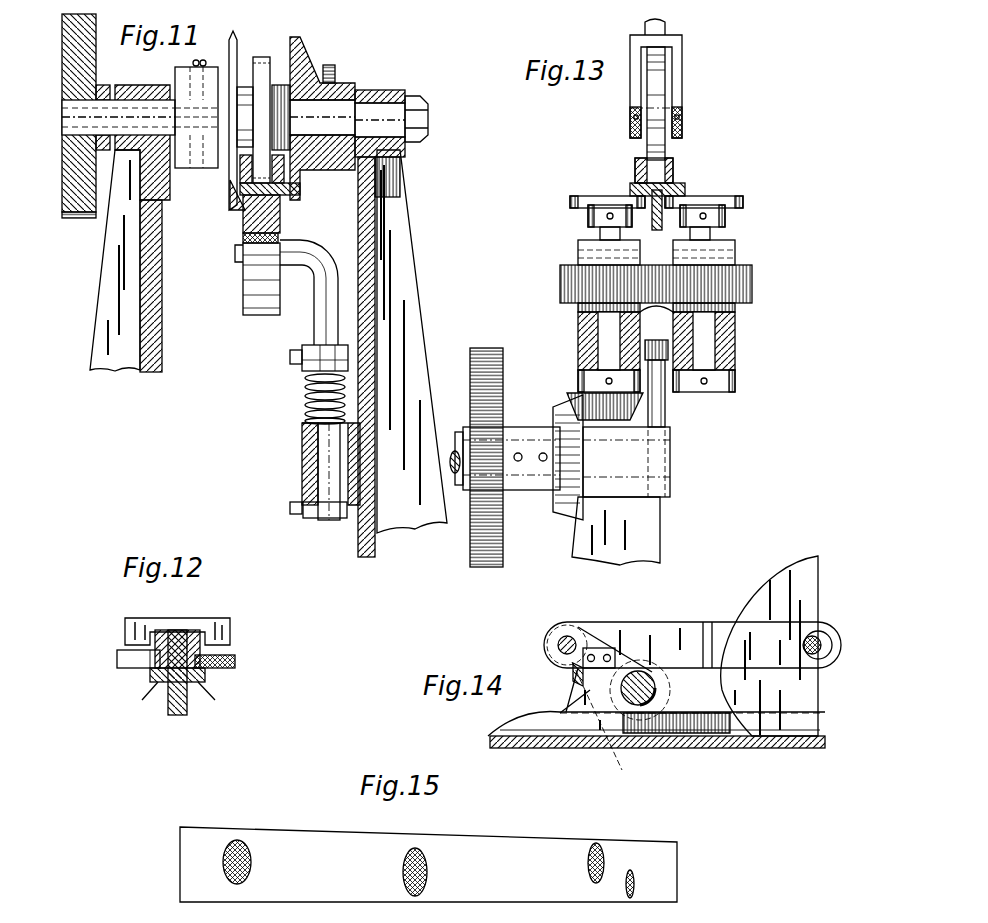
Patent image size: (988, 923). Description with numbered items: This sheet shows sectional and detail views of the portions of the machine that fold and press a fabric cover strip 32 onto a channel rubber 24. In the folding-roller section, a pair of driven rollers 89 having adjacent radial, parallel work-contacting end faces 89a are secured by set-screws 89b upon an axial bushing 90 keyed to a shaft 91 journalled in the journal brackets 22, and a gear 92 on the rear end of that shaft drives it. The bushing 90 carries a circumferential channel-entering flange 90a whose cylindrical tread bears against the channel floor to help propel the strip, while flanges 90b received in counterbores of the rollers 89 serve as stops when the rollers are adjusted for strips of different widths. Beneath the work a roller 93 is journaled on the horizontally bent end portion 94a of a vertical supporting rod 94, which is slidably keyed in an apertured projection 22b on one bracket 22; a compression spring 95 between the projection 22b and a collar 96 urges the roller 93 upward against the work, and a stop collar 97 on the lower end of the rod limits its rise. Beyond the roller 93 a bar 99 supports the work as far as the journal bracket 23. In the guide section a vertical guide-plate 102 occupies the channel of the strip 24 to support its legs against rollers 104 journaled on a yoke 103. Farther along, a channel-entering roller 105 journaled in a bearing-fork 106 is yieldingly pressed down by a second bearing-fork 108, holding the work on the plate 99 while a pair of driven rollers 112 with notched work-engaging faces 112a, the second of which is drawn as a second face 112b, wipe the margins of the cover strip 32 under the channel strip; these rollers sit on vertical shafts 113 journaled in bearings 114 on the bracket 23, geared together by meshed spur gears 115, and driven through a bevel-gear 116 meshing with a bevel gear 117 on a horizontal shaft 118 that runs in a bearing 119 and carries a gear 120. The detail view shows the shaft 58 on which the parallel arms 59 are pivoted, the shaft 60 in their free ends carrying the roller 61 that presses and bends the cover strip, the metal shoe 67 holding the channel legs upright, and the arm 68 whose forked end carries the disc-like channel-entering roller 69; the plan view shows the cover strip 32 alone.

In FIG. 11, the journal bracket 22 is at (113, 322).
In FIG. 11, the apertured projection 22b is at (302, 463).
In FIG. 13, the journal bracket 23 is at (650, 550).
In FIG. 11, the channel rubber 24 is at (300, 189).
In FIG. 13, the channel rubber 24 is at (675, 170).
In FIG. 12, the channel rubber 24 is at (206, 678).
In FIG. 14, the channel rubber 24 is at (690, 750).
In FIG. 11, the cover strip 32 is at (282, 210).
In FIG. 13, the cover strip 32 is at (687, 190).
In FIG. 12, the cover strip 32 is at (202, 690).
In FIG. 14, the cover strip 32 is at (496, 737).
In FIG. 15, the cover strip 32 is at (290, 843).
In FIG. 14, the shaft 58 is at (567, 636).
In FIG. 14, the arms 59 is at (546, 648).
In FIG. 14, the shaft 60 is at (640, 710).
In FIG. 14, the roller 61 is at (660, 690).
In FIG. 14, the metal shoe 67 is at (566, 714).
In FIG. 14, the arm 68 is at (688, 632).
In FIG. 14, the channel-entering roller 69 is at (748, 592).
In FIG. 11, the driven rollers 89 is at (198, 163).
In FIG. 11, the work-contacting end faces 89a is at (234, 75).
In FIG. 11, the set-screws 89b is at (196, 63).
In FIG. 11, the axial bushing 90 is at (261, 55).
In FIG. 11, the channel-entering flange 90a is at (229, 182).
In FIG. 11, the flanges 90b is at (229, 72).
In FIG. 11, the shaft 91 is at (380, 112).
In FIG. 11, the gear 92 is at (88, 204).
In FIG. 11, the roller 93 is at (258, 216).
In FIG. 11, the vertical supporting rod 94 is at (316, 330).
In FIG. 11, the horizontally bent end portion 94a is at (297, 268).
In FIG. 11, the compression spring 95 is at (304, 407).
In FIG. 11, the collar 96 is at (302, 372).
In FIG. 11, the stop collar 97 is at (309, 510).
In FIG. 13, the bar 99 is at (658, 232).
In FIG. 12, the bar 99 is at (168, 702).
In FIG. 12, the vertical guide-plate 102 is at (187, 640).
In FIG. 12, the yoke 103 is at (128, 626).
In FIG. 12, the rollers 104 is at (120, 658).
In FIG. 13, the channel-entering roller 105 is at (662, 142).
In FIG. 13, the bearing-fork 106 is at (672, 95).
In FIG. 13, the second bearing-fork 108 is at (632, 88).
In FIG. 13, the driven rollers 112 is at (588, 213).
In FIG. 13, the work-engaging face 112a is at (590, 195).
In FIG. 13, the right gear plate 112b is at (735, 197).
In FIG. 13, the vertical shafts 113 is at (600, 233).
In FIG. 13, the bearings 114 is at (596, 336).
In FIG. 13, the spur gears 115 is at (576, 284).
In FIG. 13, the bevel-gear 116 is at (578, 396).
In FIG. 13, the bevel gear 117 is at (565, 515).
In FIG. 13, the horizontal shaft 118 is at (455, 452).
In FIG. 13, the bearing 119 is at (640, 480).
In FIG. 13, the gear 120 is at (493, 570).